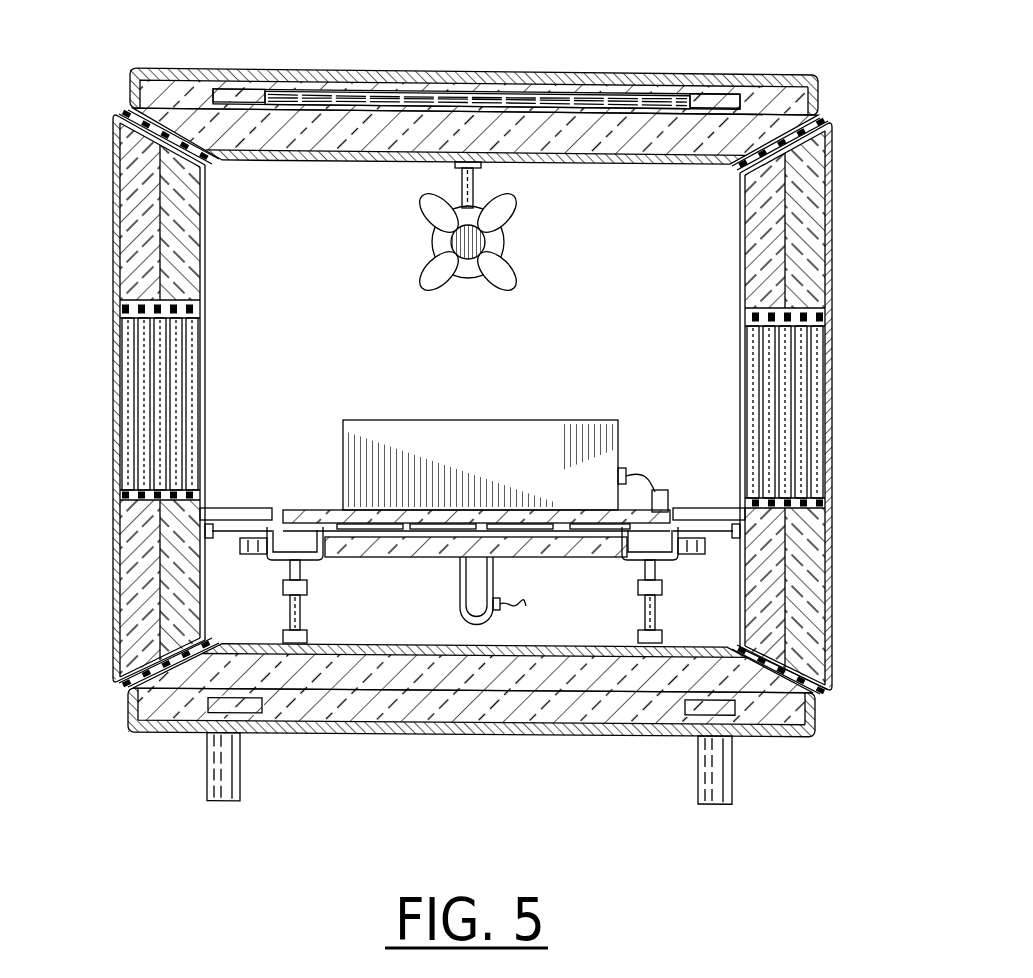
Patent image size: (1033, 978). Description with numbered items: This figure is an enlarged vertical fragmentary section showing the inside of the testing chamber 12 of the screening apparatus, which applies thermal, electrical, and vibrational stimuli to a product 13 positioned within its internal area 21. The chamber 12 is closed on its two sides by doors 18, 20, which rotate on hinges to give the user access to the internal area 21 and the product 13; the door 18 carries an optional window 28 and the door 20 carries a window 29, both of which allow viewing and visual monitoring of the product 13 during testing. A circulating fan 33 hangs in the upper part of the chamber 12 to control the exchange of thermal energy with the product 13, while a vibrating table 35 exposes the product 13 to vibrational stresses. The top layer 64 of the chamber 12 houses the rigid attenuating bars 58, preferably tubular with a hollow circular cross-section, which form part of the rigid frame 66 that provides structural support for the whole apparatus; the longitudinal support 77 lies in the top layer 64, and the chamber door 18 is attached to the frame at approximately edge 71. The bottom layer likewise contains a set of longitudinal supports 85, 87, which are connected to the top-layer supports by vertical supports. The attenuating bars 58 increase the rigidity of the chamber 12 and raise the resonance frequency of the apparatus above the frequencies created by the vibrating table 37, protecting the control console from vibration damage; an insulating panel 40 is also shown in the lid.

The chamber 12 is at (522, 84).
The product 13 is at (623, 443).
The door 18 is at (113, 600).
The door 20 is at (833, 613).
The internal area 21 is at (664, 254).
The window 28 is at (113, 382).
The window 29 is at (833, 412).
The circulating fan 33 is at (510, 270).
The vibrating table 35 is at (620, 735).
The vibrating table 37 is at (547, 560).
The lid insulating panel 40 is at (608, 108).
The rigid attenuating bars 58 is at (538, 90).
The top layer 64 is at (820, 96).
The rigid frame 66 is at (815, 722).
The edge 71 is at (247, 88).
The longitudinal support 77 is at (700, 92).
The longitudinal support 85 is at (738, 714).
The longitudinal support 87 is at (250, 713).